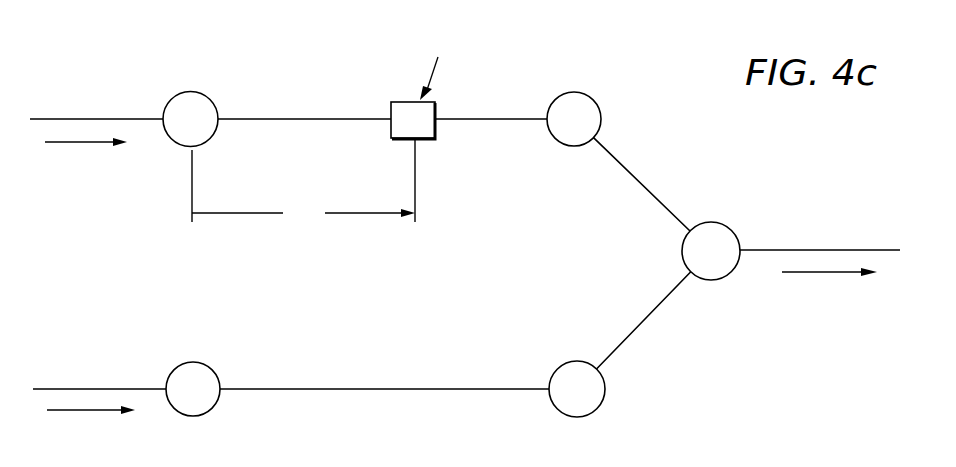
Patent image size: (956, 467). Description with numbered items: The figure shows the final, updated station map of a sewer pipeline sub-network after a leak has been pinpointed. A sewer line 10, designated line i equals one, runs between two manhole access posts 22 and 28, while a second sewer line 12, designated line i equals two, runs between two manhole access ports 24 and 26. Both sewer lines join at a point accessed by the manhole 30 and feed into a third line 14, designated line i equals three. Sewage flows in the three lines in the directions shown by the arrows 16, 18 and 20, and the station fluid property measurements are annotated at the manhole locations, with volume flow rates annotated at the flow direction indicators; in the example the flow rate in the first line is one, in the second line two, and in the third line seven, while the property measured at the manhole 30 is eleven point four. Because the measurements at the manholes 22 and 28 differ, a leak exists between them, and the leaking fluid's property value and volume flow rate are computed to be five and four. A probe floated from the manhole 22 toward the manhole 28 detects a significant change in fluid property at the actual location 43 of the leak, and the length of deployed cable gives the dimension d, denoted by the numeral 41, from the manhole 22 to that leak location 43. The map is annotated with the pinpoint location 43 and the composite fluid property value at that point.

The sewer line 10 is at (336, 117).
The second sewer line 12 is at (360, 388).
The third line 14 is at (832, 248).
The flow direction arrow 16 is at (60, 150).
The flow direction arrow 18 is at (60, 415).
The flow direction arrow 20 is at (797, 273).
The manhole access post 22 is at (213, 102).
The manhole access port 24 is at (218, 372).
The manhole access port 26 is at (605, 397).
The manhole access post 28 is at (598, 100).
The manhole 30 is at (716, 222).
The dimension d 41 is at (365, 215).
The pinpoint location of the leak 43 is at (437, 140).